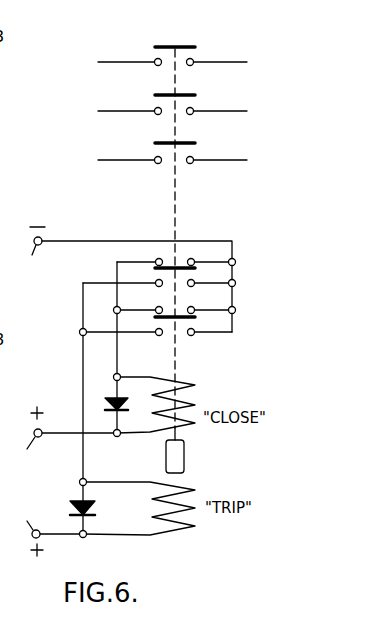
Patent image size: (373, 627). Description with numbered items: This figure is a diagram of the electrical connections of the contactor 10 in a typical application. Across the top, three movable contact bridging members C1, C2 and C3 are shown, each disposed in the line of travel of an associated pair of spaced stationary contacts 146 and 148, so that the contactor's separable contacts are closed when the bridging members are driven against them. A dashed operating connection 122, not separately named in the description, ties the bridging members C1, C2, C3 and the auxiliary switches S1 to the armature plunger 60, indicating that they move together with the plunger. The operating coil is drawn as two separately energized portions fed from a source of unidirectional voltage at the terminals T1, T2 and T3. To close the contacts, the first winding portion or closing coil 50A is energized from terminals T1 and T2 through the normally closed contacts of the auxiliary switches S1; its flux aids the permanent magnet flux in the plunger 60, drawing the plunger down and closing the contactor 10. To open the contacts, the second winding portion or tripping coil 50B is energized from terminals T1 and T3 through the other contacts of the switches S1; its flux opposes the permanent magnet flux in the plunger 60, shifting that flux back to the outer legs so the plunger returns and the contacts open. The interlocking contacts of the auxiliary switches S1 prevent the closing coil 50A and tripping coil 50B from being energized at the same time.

The contact bridging member C1 is at (159, 45).
The contact bridging member C2 is at (191, 94).
The contact bridging member C3 is at (187, 142).
The stationary contact 146 is at (156, 65).
The stationary contact 148 is at (193, 60).
The mechanical operating link 122 is at (175, 197).
The input terminal T1 is at (129, 279).
The auxiliary switch S1 is at (185, 267).
The input terminal T2 is at (65, 438).
The first winding portion 50A is at (186, 384).
The contactor 10 is at (245, 397).
The armature plunger 60 is at (228, 453).
The second winding portion 50B is at (189, 489).
The input terminal T3 is at (49, 529).